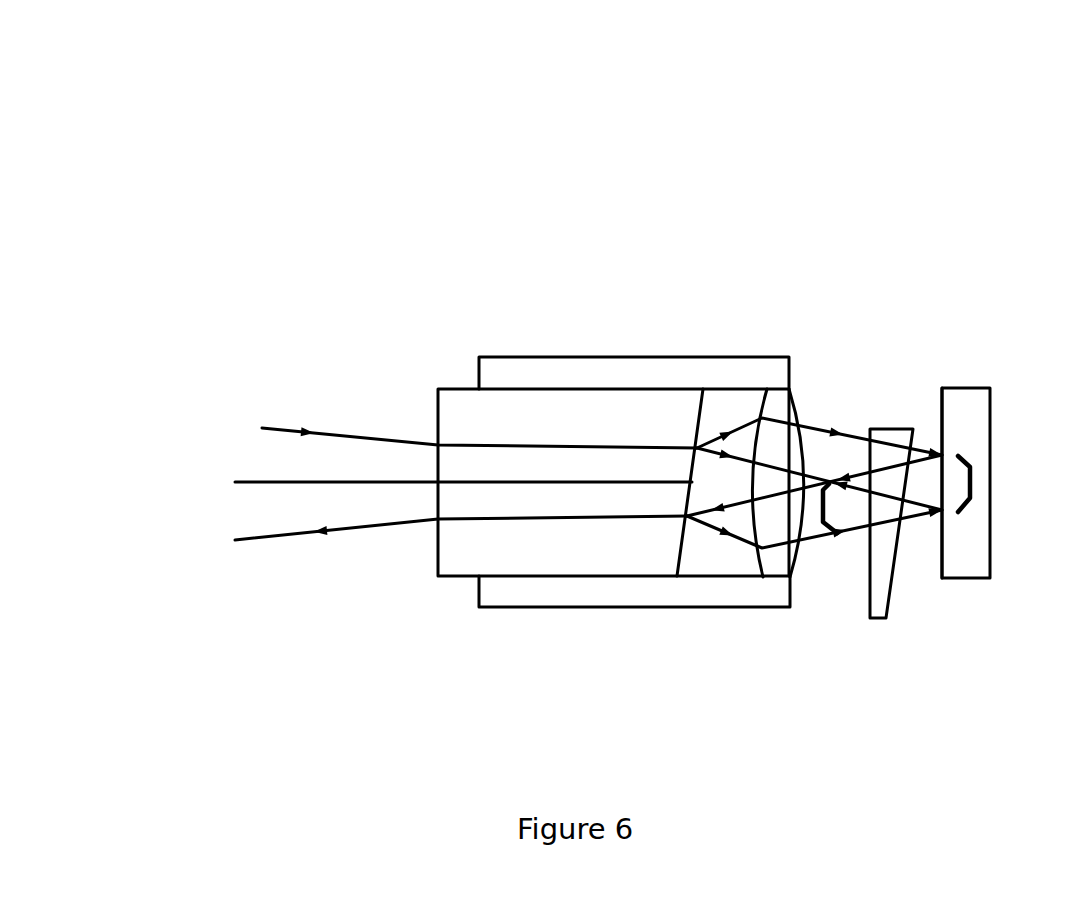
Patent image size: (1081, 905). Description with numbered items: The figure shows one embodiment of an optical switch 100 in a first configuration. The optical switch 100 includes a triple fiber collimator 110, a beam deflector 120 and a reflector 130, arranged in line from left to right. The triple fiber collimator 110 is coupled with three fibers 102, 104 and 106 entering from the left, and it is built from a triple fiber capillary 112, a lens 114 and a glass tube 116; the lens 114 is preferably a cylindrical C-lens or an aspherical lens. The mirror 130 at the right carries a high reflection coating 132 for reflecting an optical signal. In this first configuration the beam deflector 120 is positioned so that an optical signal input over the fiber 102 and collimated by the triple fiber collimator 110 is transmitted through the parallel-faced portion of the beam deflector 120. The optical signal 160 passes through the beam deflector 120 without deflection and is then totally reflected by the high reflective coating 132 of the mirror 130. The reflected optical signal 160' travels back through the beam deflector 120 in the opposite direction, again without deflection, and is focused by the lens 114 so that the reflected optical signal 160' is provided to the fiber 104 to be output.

The optical switch 100 is at (606, 60).
The fiber 102 is at (295, 428).
The fiber 104 is at (257, 537).
The fiber 106 is at (255, 480).
The triple fiber collimator 110 is at (598, 178).
The triple fiber capillary 112 is at (440, 552).
The lens 114 is at (762, 562).
The glass tube 116 is at (560, 357).
The beam deflector 120 is at (892, 430).
The reflector 130 is at (965, 388).
The high reflection coating 132 is at (939, 408).
The optical signal 160 is at (1018, 484).
The reflected optical signal 160' is at (805, 571).